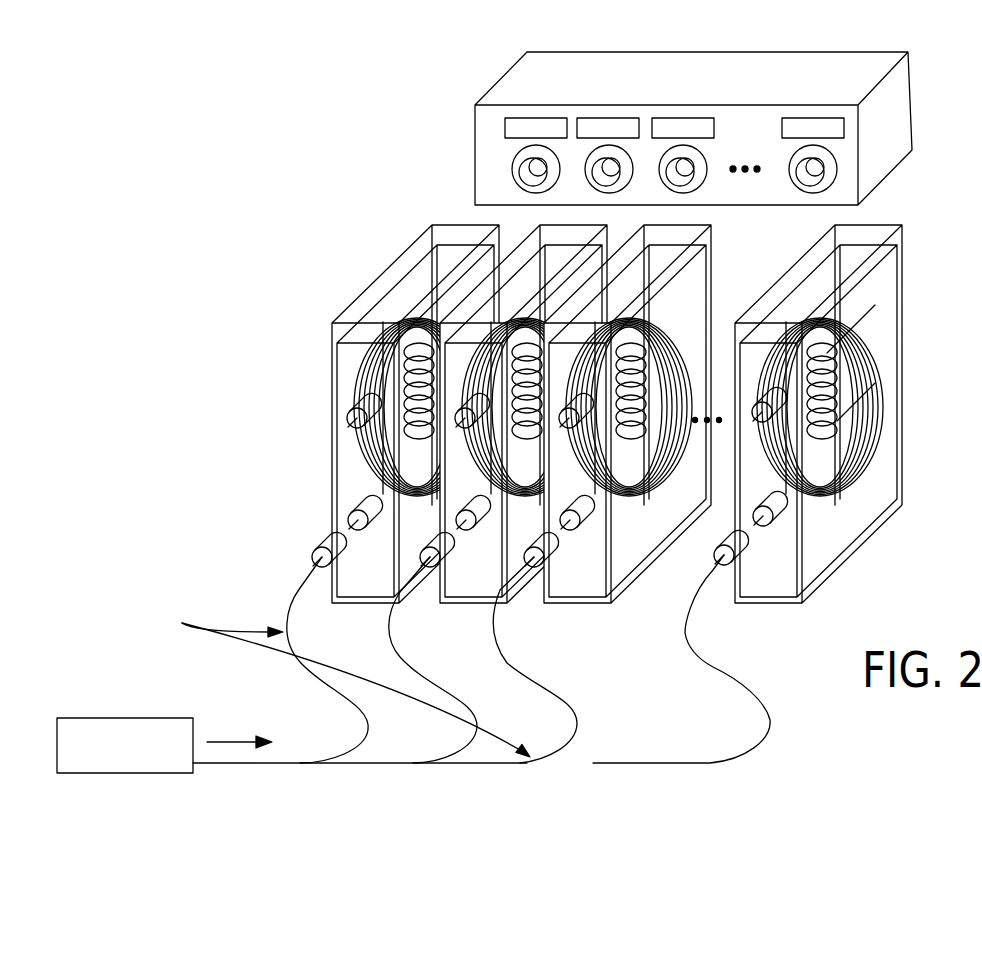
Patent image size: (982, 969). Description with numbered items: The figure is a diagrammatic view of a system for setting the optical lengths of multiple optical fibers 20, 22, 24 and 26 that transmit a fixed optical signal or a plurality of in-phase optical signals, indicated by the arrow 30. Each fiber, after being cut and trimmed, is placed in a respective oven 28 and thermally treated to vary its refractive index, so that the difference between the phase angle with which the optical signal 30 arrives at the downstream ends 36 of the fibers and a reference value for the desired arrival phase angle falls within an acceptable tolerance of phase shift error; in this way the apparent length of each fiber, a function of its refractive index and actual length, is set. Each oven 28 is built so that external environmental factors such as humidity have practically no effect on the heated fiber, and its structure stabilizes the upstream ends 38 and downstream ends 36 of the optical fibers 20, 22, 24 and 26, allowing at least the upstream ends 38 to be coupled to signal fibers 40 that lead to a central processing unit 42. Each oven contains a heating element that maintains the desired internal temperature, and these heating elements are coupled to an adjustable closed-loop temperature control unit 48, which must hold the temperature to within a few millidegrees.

The optical fiber 20 is at (360, 365).
The optical fiber 22 is at (503, 316).
The optical fiber 24 is at (645, 308).
The optical fiber 26 is at (877, 353).
The oven 28 is at (402, 293).
The optical signal 30 is at (237, 737).
The downstream ends 36 is at (377, 390).
The upstream ends 38 is at (370, 496).
The signal fibers 40 is at (380, 745).
The central processing unit 42 is at (108, 717).
The temperature control unit 48 is at (463, 148).